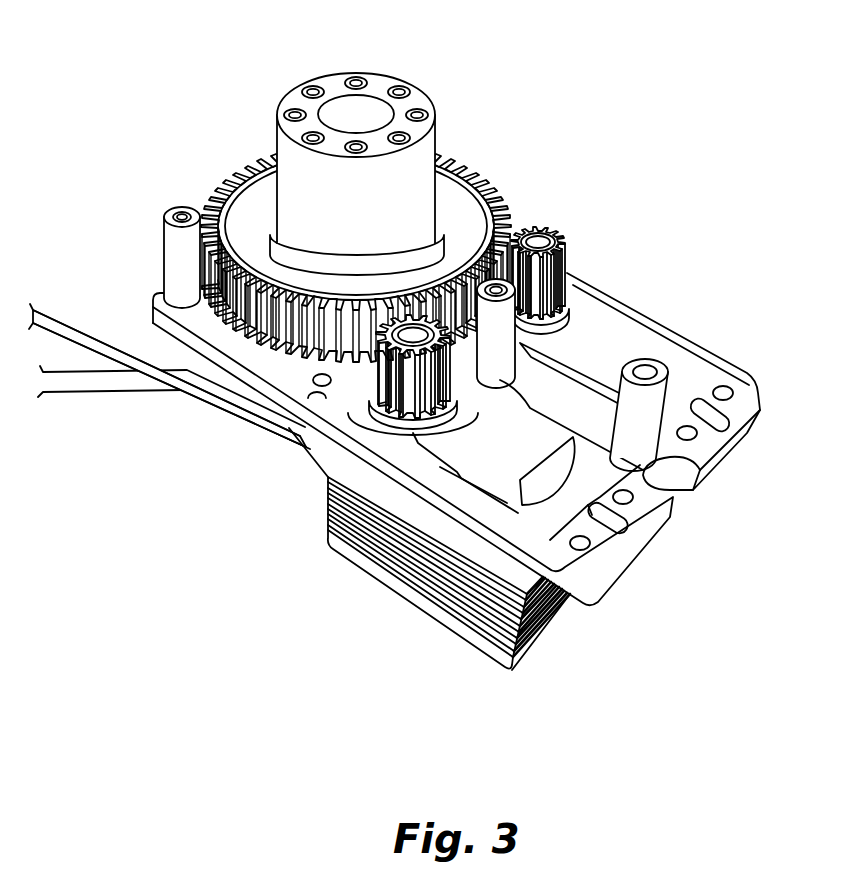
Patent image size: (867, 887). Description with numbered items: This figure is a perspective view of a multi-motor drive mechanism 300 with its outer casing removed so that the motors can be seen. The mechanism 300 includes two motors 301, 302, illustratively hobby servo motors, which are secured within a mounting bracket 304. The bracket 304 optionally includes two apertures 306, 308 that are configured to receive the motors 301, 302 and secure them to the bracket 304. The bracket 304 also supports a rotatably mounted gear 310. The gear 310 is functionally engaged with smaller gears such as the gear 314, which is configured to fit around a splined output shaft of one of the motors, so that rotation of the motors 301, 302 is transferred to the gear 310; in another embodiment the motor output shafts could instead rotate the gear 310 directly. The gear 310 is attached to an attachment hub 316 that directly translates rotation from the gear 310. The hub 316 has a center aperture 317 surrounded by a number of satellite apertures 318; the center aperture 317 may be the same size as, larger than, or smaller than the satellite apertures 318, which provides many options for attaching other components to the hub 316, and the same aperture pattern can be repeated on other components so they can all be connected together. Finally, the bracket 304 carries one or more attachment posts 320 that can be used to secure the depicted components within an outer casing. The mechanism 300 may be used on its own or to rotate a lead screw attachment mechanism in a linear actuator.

The multi-motor drive mechanism 300 is at (262, 630).
The motor 301 is at (470, 642).
The motor 302 is at (668, 347).
The mounting bracket 304 is at (657, 540).
The aperture 306 is at (548, 548).
The aperture 308 is at (693, 410).
The gear 310 is at (484, 170).
The gear 314 is at (557, 235).
The attachment hub 316 is at (335, 145).
The center aperture 317 is at (359, 112).
The satellite apertures 318 is at (313, 88).
The attachment posts 320 is at (167, 255).